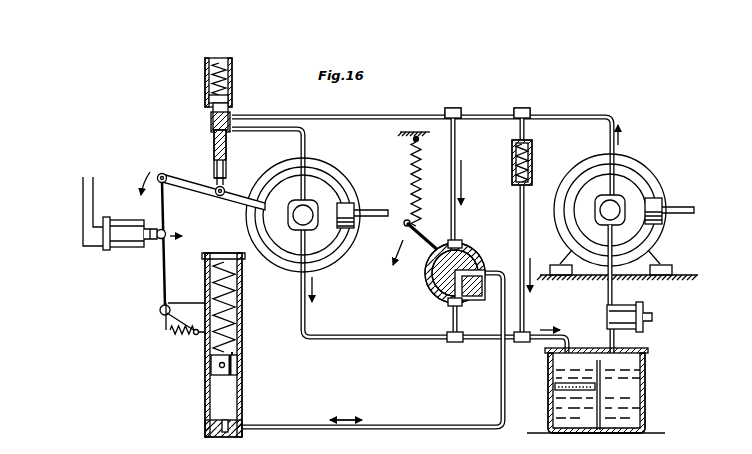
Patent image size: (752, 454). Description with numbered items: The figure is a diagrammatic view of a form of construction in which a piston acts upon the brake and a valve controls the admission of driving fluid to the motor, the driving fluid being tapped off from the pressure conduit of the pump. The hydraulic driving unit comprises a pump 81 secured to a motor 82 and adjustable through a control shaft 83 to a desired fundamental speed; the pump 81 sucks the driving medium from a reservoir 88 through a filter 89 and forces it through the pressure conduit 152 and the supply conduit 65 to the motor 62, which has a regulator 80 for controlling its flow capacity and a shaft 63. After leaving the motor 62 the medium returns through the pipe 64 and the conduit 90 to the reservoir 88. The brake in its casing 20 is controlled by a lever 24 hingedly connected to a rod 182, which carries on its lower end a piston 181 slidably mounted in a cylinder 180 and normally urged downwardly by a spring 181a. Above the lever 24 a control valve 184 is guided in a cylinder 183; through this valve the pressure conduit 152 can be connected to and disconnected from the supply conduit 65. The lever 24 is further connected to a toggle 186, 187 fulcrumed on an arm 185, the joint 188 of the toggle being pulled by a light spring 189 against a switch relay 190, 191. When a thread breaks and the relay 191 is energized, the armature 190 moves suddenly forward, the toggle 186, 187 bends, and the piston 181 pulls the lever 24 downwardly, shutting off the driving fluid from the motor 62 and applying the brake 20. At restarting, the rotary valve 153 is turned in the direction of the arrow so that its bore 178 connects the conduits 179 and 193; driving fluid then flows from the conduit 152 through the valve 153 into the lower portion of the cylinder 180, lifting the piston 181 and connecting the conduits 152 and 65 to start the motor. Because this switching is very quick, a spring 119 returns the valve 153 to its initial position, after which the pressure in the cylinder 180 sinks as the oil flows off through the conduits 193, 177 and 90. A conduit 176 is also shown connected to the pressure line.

The brake 20 is at (303, 203).
The lever 24 is at (177, 180).
The motor 62 is at (325, 188).
The control shaft 63 is at (366, 210).
The pipe 64 is at (352, 332).
The supply conduit 65 is at (296, 140).
The regulator 80 is at (347, 204).
The pump 81 is at (630, 182).
The motor 82 is at (617, 205).
The control shaft 83 is at (666, 205).
The reservoir 88 is at (640, 364).
The filter 89 is at (620, 306).
The conduit 90 is at (574, 331).
The spring 119 is at (426, 180).
The pressure conduit 152 is at (333, 112).
The rotary valve 153 is at (464, 252).
The valve 176 is at (533, 148).
The conduit 177 is at (452, 314).
The bore 178 is at (487, 258).
The conduit 179 is at (456, 140).
The cylinder 180 is at (241, 296).
The piston 181 is at (237, 360).
The spring 181a is at (236, 318).
The rod 182 is at (214, 240).
The cylinder 183 is at (232, 64).
The control valve 184 is at (229, 103).
The arm 185 is at (186, 301).
The toggle 186 is at (157, 302).
The toggle 187 is at (166, 204).
The joint 188 is at (166, 232).
The light spring 189 is at (183, 340).
The armature 190 is at (152, 250).
The relay 191 is at (108, 255).
The conduit 193 is at (308, 413).